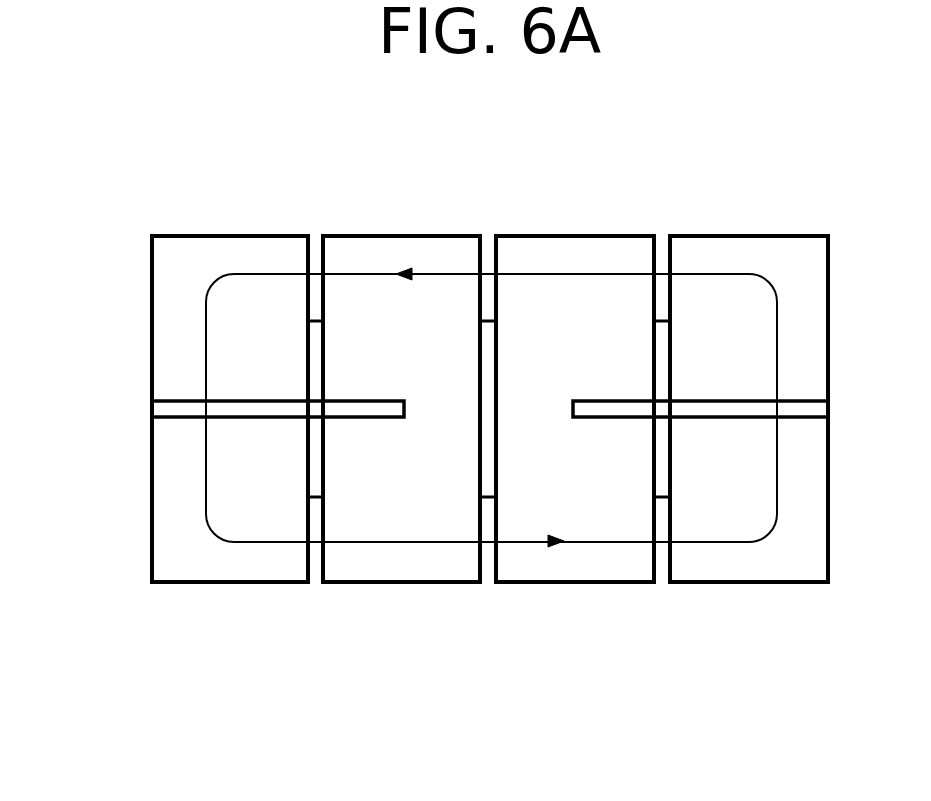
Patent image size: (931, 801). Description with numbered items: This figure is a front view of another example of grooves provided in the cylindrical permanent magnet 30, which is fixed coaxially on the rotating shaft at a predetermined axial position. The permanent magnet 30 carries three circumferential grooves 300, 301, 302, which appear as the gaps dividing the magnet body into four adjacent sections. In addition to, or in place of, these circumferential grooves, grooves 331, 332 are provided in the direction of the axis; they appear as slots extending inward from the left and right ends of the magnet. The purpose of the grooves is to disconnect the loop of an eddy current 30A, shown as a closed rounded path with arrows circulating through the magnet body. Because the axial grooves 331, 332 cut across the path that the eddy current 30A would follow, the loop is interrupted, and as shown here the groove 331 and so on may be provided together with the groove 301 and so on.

The permanent magnet 30 is at (152, 312).
The eddy current 30A is at (557, 274).
The circumferential groove 300 is at (314, 570).
The circumferential groove 301 is at (487, 570).
The circumferential groove 302 is at (659, 570).
The groove 331 is at (244, 400).
The groove 332 is at (713, 400).